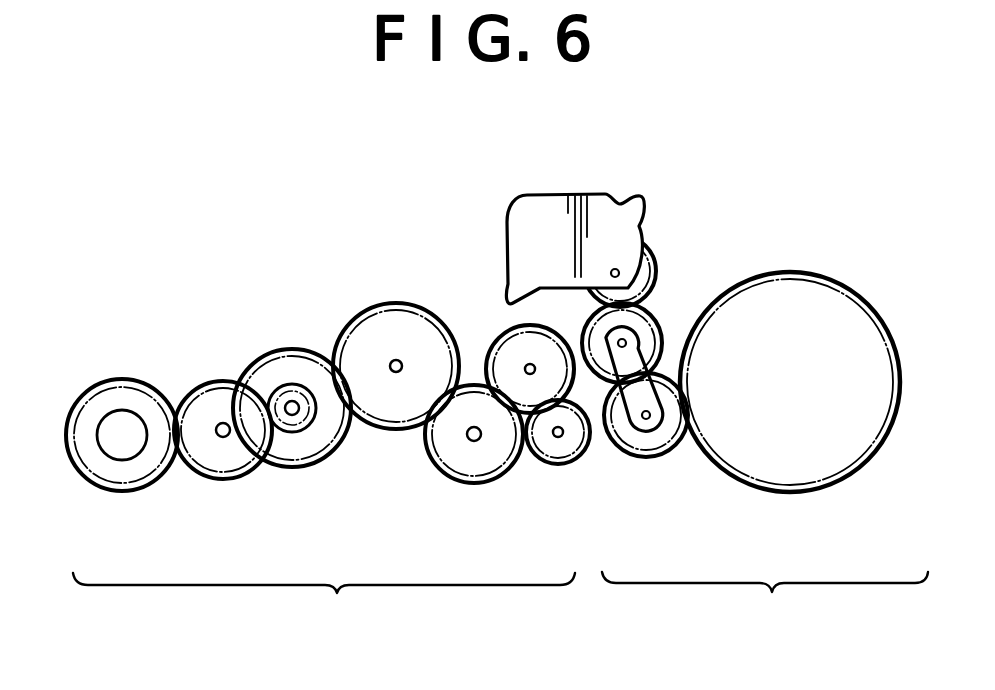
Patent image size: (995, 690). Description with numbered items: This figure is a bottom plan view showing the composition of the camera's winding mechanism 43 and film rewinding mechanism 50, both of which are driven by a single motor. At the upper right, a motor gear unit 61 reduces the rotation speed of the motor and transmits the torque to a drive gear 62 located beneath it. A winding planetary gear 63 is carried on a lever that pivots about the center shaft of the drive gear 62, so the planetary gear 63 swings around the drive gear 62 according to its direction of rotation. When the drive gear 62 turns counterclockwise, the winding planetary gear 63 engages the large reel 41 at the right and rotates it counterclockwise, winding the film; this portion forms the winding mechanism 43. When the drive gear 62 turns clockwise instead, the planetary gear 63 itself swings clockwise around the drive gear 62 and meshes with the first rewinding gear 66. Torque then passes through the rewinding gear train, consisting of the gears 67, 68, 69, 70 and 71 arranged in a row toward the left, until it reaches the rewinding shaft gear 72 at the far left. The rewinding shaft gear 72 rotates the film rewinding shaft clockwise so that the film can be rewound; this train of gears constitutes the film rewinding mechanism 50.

The reel 41 is at (773, 493).
The winding mechanism 43 is at (765, 606).
The film rewinding mechanism 50 is at (324, 608).
The motor gear unit 61 is at (533, 208).
The drive gear 62 is at (652, 320).
The winding planetary gear 63 is at (650, 458).
The first rewinding gear 66 is at (551, 466).
The rewinding gear train gear 67 is at (494, 338).
The rewinding gear train gear 68 is at (435, 467).
The rewinding gear train gear 69 is at (370, 312).
The rewinding gear train gear 70 is at (281, 350).
The rewinding gear train gear 71 is at (203, 388).
The rewinding shaft gear 72 is at (110, 380).